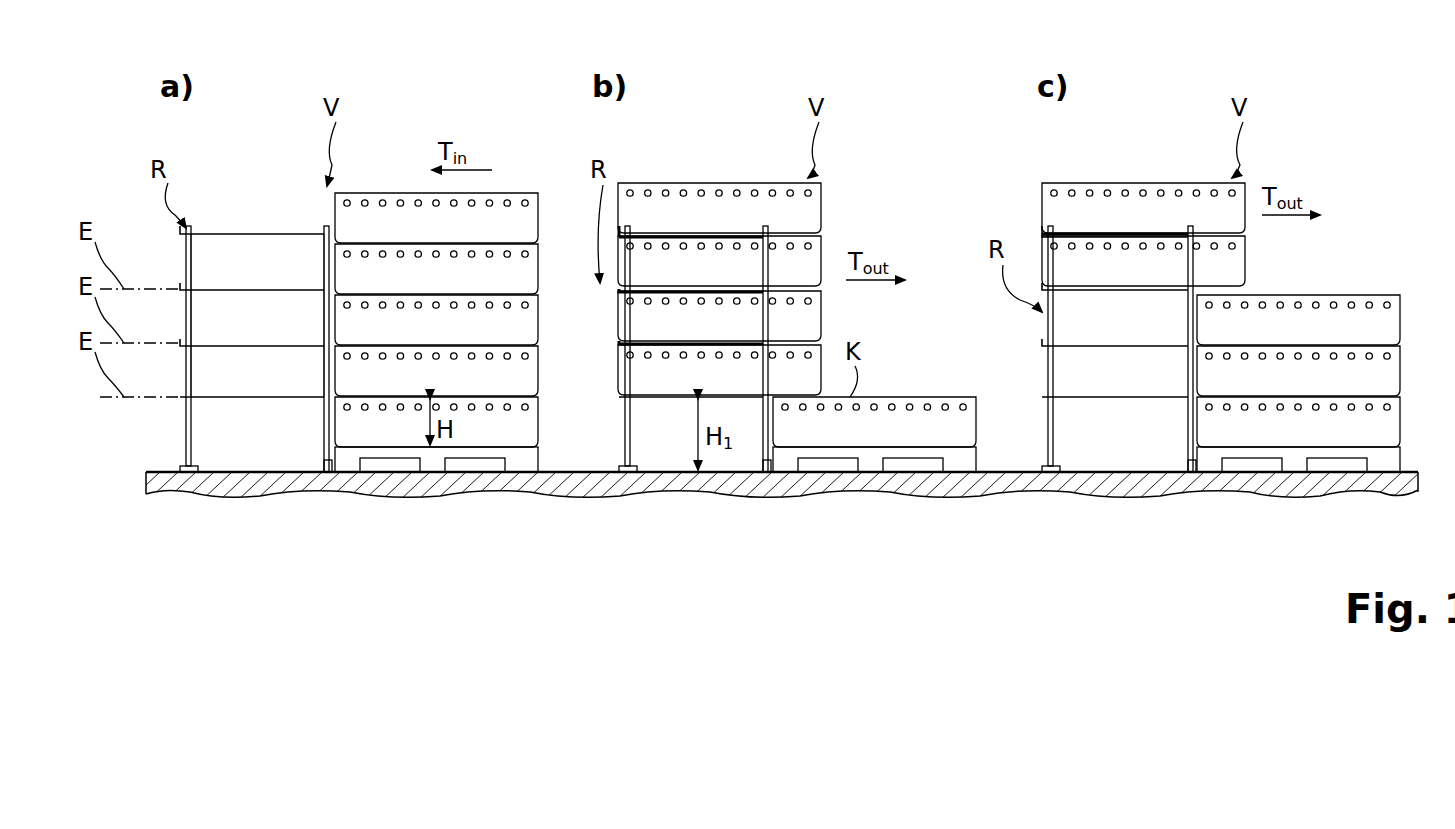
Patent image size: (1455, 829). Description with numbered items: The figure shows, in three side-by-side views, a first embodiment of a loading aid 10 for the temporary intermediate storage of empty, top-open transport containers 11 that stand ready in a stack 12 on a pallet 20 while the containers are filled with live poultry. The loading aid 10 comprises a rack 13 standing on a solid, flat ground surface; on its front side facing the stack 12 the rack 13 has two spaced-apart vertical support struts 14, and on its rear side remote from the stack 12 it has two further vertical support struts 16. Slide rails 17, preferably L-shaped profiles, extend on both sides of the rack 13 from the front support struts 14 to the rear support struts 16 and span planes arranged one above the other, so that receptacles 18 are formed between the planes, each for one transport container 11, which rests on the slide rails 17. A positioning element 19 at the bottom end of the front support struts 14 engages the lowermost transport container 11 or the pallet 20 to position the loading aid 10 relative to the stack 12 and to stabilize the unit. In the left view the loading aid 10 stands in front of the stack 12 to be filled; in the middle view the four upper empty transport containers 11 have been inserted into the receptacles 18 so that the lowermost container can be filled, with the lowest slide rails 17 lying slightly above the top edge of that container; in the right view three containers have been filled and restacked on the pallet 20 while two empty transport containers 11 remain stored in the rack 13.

The loading aid 10 is at (250, 200).
The transport container 11 is at (535, 225).
The stack 12 is at (508, 186).
The rack 13 is at (186, 448).
The vertical support strut 14 is at (322, 420).
The vertical support strut 16 is at (192, 420).
The slide rail 17 is at (243, 234).
The receptacle 18 is at (669, 315).
The positioning element 19 is at (327, 476).
The pallet 20 is at (435, 463).